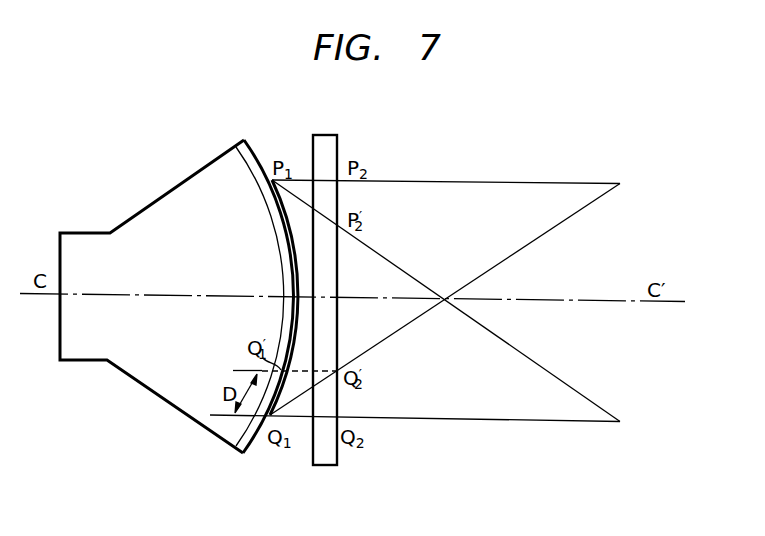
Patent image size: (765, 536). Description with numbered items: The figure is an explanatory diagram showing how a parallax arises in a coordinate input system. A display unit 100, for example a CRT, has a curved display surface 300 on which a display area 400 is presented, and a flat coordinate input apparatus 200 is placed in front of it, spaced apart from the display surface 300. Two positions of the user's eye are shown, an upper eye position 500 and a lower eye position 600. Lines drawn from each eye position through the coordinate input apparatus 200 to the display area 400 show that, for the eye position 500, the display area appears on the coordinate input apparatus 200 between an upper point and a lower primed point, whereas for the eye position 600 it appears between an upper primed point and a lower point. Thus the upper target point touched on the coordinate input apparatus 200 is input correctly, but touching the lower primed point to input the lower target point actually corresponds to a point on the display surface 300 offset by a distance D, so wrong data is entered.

The display unit 100 is at (133, 378).
The coordinate input apparatus 200 is at (334, 135).
The display surface 300 is at (245, 141).
The display area 400 is at (291, 248).
The eye position 500 is at (465, 294).
The eye position 600 is at (435, 308).